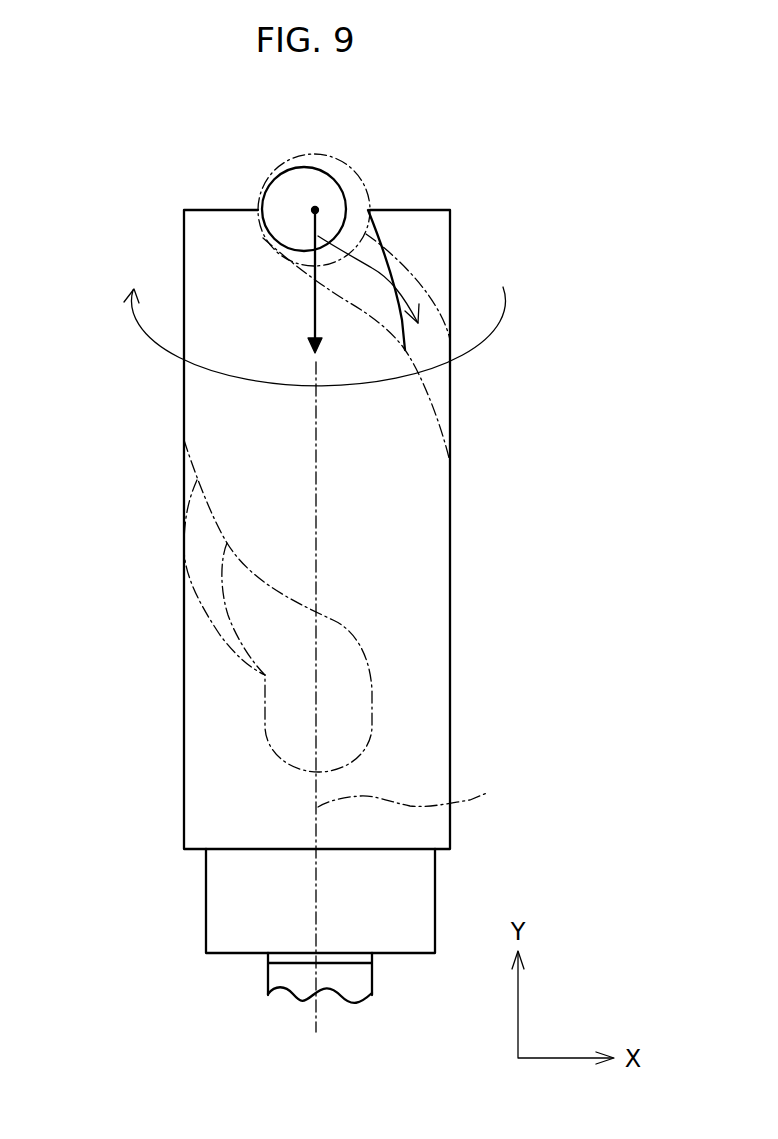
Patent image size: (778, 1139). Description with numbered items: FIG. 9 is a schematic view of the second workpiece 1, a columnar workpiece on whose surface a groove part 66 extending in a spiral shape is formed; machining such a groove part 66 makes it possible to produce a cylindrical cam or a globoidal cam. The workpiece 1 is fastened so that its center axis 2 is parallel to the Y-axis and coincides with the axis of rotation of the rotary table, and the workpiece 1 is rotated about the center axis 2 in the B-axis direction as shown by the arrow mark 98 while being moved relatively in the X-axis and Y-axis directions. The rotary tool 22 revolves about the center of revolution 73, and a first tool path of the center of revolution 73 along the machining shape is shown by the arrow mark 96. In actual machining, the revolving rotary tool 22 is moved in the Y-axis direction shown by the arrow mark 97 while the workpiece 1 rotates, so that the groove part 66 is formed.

The second workpiece 1 is at (397, 550).
The center axis 2 is at (413, 790).
The rotary tool 22 is at (300, 167).
The groove part 66 is at (418, 268).
The center of revolution 73 is at (315, 210).
The arrow mark 96 is at (377, 264).
The arrow mark 97 is at (313, 310).
The arrow mark 98 is at (160, 347).